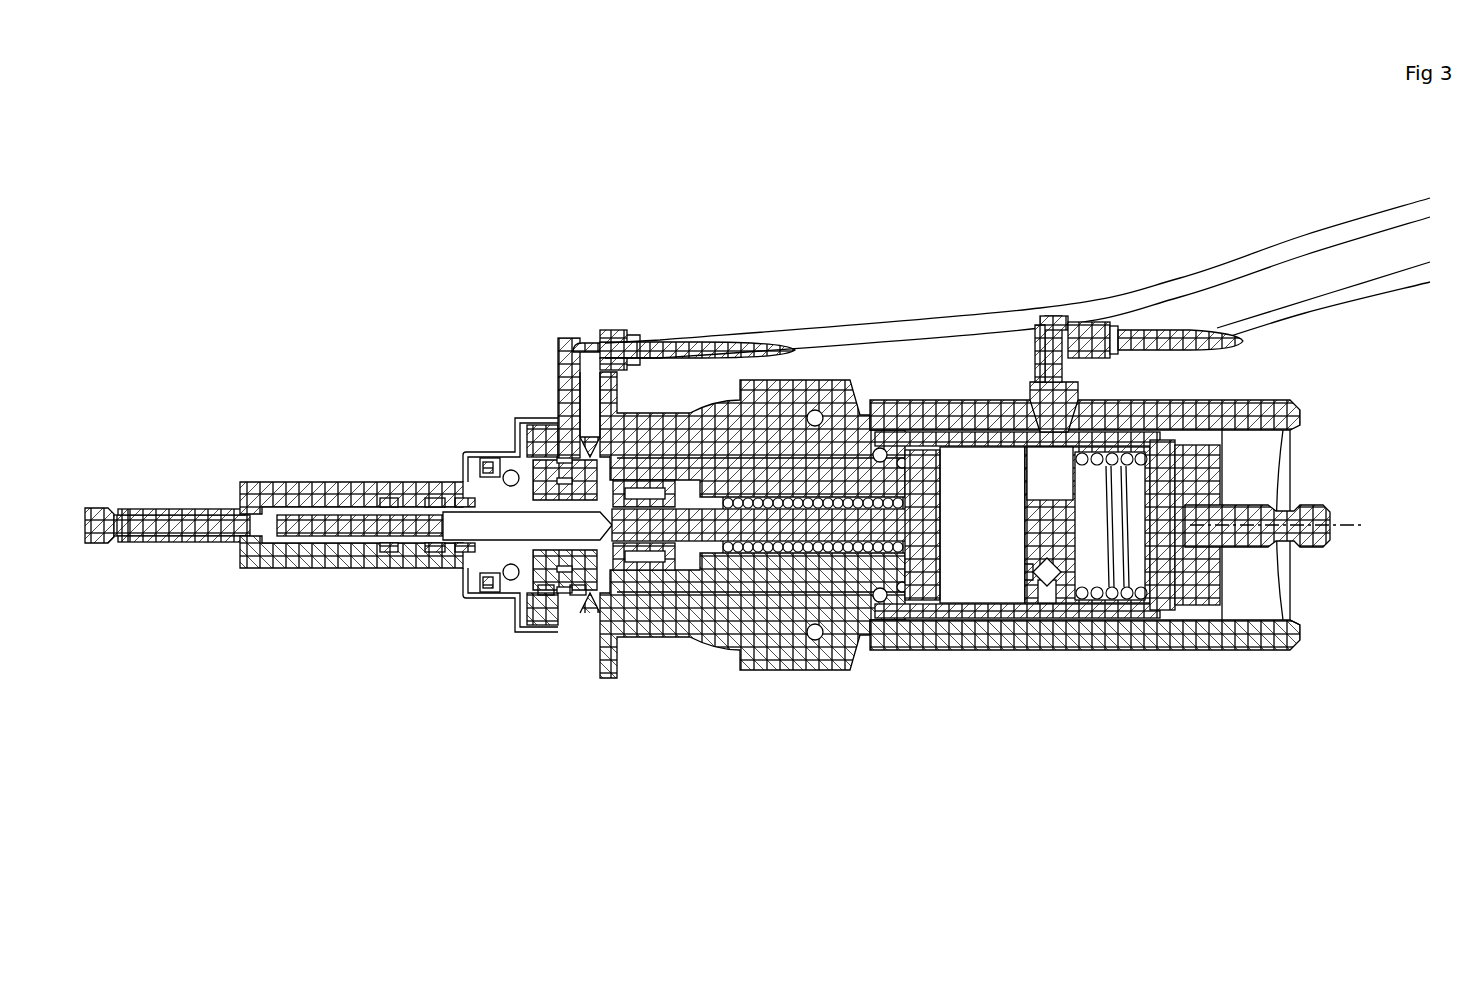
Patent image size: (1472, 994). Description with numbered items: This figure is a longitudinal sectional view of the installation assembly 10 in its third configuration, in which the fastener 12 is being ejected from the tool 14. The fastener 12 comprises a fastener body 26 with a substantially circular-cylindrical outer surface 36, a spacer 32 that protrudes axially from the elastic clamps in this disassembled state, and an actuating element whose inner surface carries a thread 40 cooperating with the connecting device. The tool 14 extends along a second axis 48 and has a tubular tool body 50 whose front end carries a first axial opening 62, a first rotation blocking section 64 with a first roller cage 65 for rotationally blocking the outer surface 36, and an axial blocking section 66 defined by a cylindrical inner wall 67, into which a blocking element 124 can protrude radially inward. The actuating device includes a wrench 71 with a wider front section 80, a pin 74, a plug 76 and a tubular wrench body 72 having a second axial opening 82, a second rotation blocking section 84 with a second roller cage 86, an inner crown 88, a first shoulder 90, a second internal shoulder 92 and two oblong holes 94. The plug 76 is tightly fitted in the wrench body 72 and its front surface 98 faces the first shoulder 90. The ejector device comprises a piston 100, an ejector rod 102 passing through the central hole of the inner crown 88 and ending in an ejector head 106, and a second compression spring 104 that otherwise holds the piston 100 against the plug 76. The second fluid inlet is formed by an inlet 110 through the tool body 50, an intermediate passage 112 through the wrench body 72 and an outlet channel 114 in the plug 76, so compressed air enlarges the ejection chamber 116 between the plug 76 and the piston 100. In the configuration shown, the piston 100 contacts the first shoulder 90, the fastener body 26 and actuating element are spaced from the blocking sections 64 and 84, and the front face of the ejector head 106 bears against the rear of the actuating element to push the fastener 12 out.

The installation assembly 10 is at (218, 215).
The fastener 12 is at (280, 622).
The tool 14 is at (1106, 712).
The fastener body 26 is at (347, 480).
The spacer 32 is at (170, 510).
The outer surface 36 is at (470, 505).
The thread 40 is at (488, 527).
The second axis 48 is at (1340, 524).
The tool body 50 is at (1262, 665).
The first axial opening 62 is at (433, 572).
The first rotation blocking section 64 is at (578, 603).
The first roller cage 65 is at (548, 600).
The axial blocking section 66 is at (497, 447).
The inner wall 67 is at (468, 572).
The wrench 71 is at (1242, 572).
The wrench body 72 is at (940, 627).
The pin 74 is at (1165, 567).
The plug 76 is at (1088, 328).
The front section 80 is at (1148, 547).
The second axial opening 82 is at (620, 592).
The second rotation blocking section 84 is at (652, 577).
The second roller cage 86 is at (668, 480).
The inner crown 88 is at (707, 570).
The first shoulder 90 is at (885, 455).
The second internal shoulder 92 is at (1060, 490).
The oblong holes 94 is at (1157, 418).
The front surface 98 is at (1023, 480).
The piston 100 is at (907, 594).
The ejector rod 102 is at (822, 410).
The second compression spring 104 is at (780, 574).
The ejector head 106 is at (588, 440).
The inlet 110 is at (1057, 300).
The intermediate passage 112 is at (1045, 592).
The outlet channel 114 is at (1055, 574).
The ejection chamber 116 is at (992, 562).
The blocking element 124 is at (503, 582).